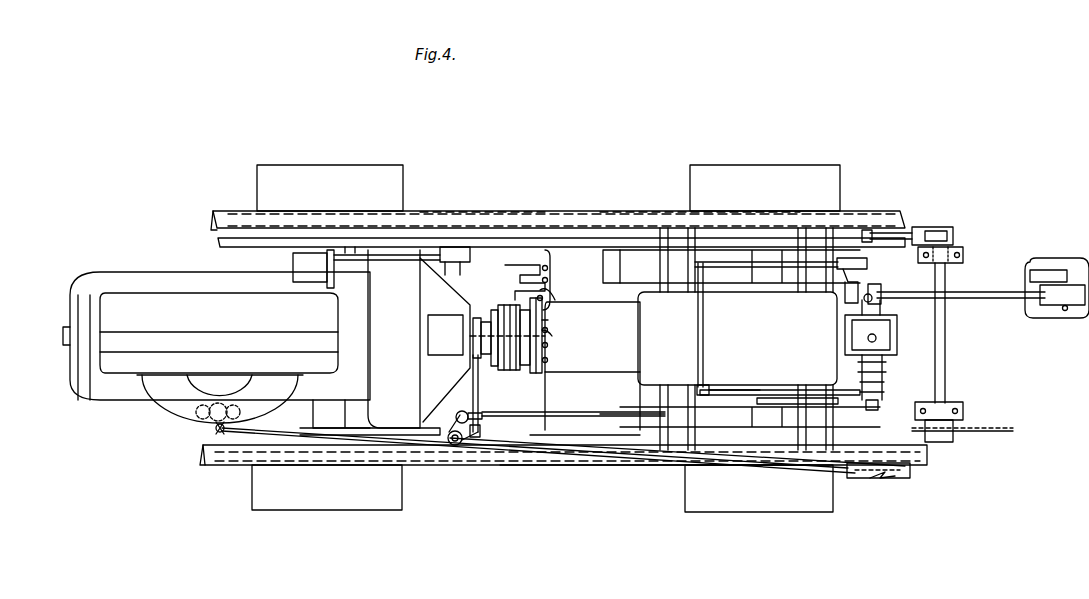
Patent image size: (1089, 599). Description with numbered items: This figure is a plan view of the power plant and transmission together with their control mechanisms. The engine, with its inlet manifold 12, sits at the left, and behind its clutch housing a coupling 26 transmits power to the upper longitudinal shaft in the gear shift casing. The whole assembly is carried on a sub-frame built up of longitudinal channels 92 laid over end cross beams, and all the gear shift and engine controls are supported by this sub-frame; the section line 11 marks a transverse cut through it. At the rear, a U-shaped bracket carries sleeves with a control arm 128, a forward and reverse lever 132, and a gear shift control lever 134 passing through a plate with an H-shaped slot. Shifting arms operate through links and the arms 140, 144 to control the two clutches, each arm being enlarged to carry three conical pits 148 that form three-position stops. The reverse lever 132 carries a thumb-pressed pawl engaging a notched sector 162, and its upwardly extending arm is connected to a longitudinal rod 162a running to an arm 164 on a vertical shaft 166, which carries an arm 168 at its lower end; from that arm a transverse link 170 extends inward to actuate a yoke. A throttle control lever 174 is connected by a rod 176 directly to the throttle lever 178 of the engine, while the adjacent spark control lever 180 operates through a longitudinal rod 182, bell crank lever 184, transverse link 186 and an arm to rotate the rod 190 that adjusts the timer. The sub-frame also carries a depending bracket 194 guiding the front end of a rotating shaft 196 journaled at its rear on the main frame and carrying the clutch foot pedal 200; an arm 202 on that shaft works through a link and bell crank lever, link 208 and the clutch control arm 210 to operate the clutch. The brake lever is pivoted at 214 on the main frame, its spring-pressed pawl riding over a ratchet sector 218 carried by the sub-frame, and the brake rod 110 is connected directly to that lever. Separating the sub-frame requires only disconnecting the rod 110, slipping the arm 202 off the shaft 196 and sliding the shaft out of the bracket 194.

The section line 11 is at (455, 212).
The inlet manifold 12 is at (162, 404).
The coupling 26 is at (540, 350).
The longitudinal channels 92 is at (546, 215).
The rod 110 is at (910, 230).
The control arm 128 is at (788, 398).
The forward and reverse lever 132 is at (873, 300).
The gear shift control lever 134 is at (880, 338).
The arm 140 is at (762, 392).
The arm 144 is at (705, 385).
The conical pits 148 is at (733, 381).
The sector 162 is at (882, 333).
The longitudinal rod 162a is at (612, 408).
The arm 164 is at (458, 423).
The vertical shaft 166 is at (456, 446).
The arm 168 is at (478, 438).
The transverse link 170 is at (482, 413).
The throttle control lever 174 is at (882, 478).
The rod 176 is at (600, 455).
The throttle lever 178 is at (216, 428).
The spark control lever 180 is at (887, 462).
The longitudinal rod 182 is at (790, 468).
The bell crank lever 184 is at (672, 452).
The transverse link 186 is at (704, 340).
The rod 190 is at (406, 260).
The depending bracket 194 is at (880, 290).
The rotating shaft 196 is at (975, 292).
The clutch foot pedal 200 is at (1048, 268).
The arm 202 is at (860, 280).
The link 208 is at (730, 268).
The clutch control arm 210 is at (457, 272).
The pivot 214 is at (945, 366).
The ratchet sector 218 is at (1000, 427).